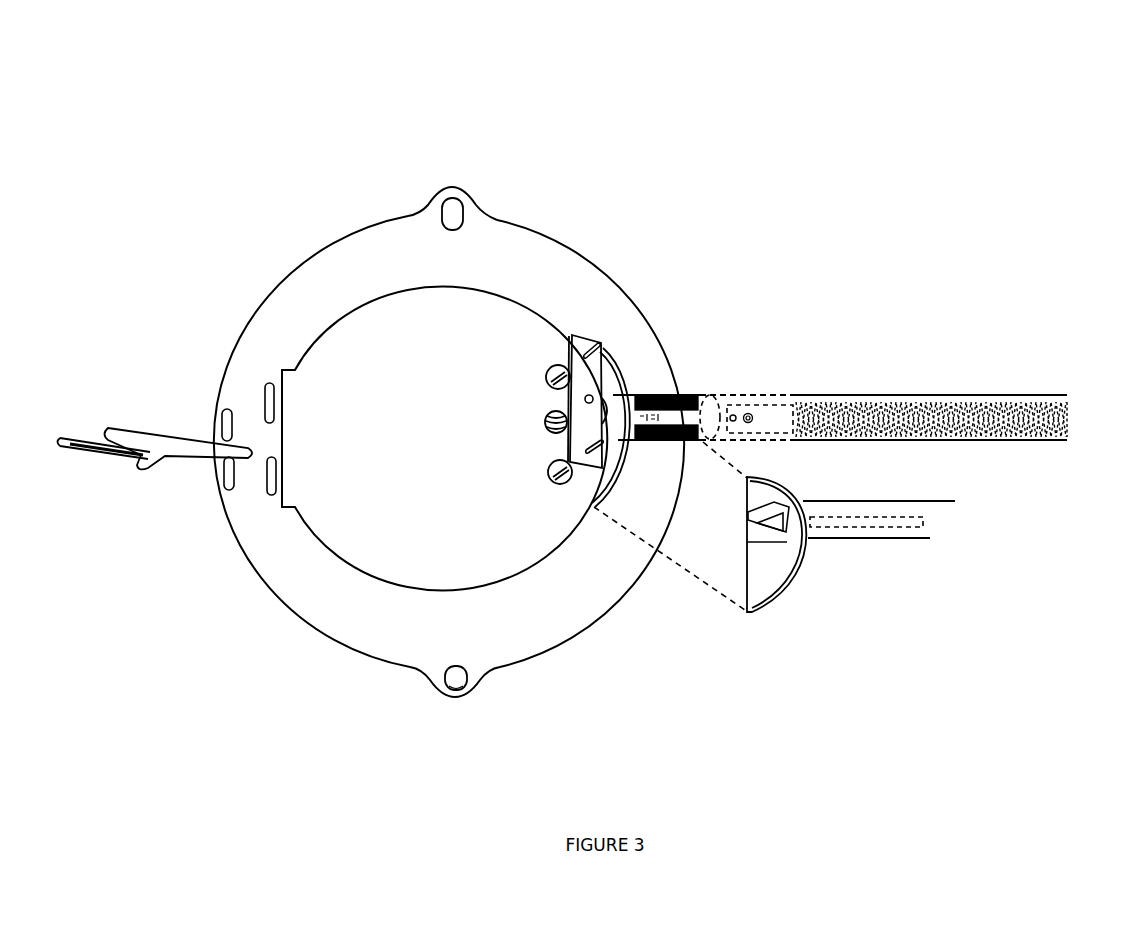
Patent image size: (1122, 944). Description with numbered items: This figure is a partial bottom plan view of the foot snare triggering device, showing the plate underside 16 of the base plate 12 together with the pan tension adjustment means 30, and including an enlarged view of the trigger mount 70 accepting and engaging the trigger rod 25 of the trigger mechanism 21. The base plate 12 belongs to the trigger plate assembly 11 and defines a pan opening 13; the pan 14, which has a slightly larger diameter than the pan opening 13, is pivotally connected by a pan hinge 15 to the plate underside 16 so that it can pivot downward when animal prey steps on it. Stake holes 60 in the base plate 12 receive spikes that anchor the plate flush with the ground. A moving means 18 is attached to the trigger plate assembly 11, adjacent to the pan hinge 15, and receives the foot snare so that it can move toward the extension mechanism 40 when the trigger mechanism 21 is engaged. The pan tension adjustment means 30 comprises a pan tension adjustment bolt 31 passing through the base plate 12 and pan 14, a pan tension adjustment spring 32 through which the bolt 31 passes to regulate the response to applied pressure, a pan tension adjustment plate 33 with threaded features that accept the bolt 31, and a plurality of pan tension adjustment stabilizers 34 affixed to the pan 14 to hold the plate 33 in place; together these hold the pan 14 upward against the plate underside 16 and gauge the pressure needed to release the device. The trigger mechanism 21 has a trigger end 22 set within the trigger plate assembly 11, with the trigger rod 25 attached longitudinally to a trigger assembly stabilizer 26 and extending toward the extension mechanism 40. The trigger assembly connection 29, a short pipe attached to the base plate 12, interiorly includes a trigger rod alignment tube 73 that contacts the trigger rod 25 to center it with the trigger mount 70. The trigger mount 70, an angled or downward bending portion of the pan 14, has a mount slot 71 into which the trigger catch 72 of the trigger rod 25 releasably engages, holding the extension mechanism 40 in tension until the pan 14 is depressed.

The trigger plate assembly 11 is at (655, 120).
The base plate 12 is at (259, 578).
The pan opening 13 is at (404, 586).
The pan 14 is at (444, 531).
The pan hinge 15 is at (263, 390).
The plate underside 16 is at (355, 602).
The moving means 18 is at (62, 447).
The trigger mechanism 21 is at (970, 530).
The trigger end 22 is at (643, 395).
The trigger rod 25 is at (725, 423).
The trigger assembly stabilizer 26 is at (783, 412).
The trigger assembly connection 29 is at (718, 403).
The pan tension adjustment means 30 is at (532, 445).
The pan tension adjustment bolt 31 is at (586, 396).
The pan tension adjustment spring 32 is at (548, 415).
The pan tension adjustment plate 33 is at (585, 468).
The pan tension adjustment stabilizers 34 is at (598, 345).
The extension mechanism 40 is at (1065, 420).
The stake holes 60 is at (452, 213).
The trigger mount 70 is at (606, 373).
The mount slot 71 is at (762, 528).
The trigger catch 72 is at (807, 530).
The trigger rod alignment tube 73 is at (677, 395).